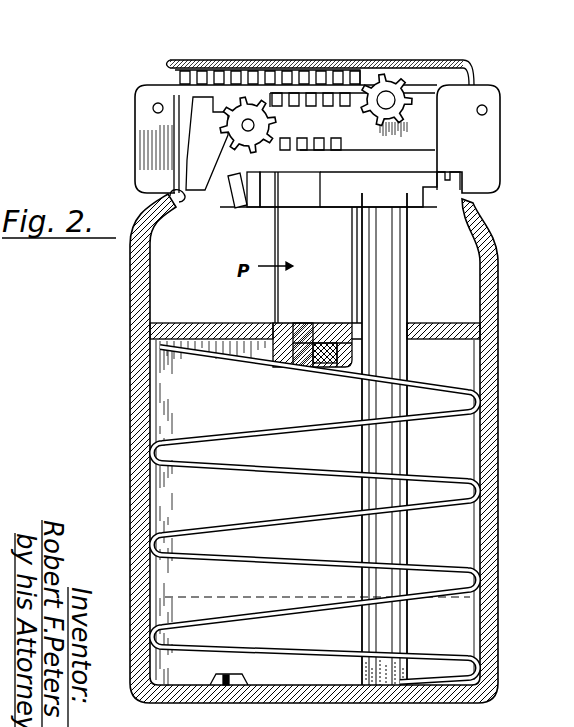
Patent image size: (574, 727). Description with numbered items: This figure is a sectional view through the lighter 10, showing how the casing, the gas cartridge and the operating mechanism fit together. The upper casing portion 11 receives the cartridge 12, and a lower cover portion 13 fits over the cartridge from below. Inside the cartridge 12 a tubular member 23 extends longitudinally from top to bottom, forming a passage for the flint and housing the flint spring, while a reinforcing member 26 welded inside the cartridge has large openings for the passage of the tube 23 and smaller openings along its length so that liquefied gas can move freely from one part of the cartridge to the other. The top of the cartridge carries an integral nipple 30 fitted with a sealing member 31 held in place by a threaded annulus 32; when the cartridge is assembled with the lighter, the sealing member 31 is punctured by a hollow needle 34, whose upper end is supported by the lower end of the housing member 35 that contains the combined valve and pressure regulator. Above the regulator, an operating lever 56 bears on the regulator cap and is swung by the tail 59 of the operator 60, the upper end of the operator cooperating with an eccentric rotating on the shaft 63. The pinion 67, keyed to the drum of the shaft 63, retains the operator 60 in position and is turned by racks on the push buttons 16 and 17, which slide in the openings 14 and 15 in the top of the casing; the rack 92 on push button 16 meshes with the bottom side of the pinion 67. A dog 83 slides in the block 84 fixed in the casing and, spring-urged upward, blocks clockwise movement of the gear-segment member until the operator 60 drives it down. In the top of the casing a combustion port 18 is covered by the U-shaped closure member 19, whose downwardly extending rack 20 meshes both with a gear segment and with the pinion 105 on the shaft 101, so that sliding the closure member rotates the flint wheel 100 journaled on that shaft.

The lighter 10 is at (503, 321).
The upper casing portion 11 is at (130, 333).
The cartridge 12 is at (188, 323).
The lower cover portion 13 is at (132, 664).
The opening 14 is at (480, 87).
The opening 15 is at (167, 84).
The push button 16 is at (500, 137).
The push button 17 is at (136, 137).
The combustion port 18 is at (333, 66).
The closure member 19 is at (310, 62).
The rack 20 is at (342, 86).
The tubular member 23 is at (400, 284).
The reinforcing member 26 is at (453, 384).
The nipple 30 is at (277, 347).
The sealing member 31 is at (293, 368).
The threaded annulus 32 is at (305, 370).
The hollow needle 34 is at (317, 370).
The housing member 35 is at (285, 294).
The operating lever 56 is at (243, 208).
The tail 59 is at (278, 215).
The operator 60 is at (262, 174).
The shaft 63 is at (245, 127).
The pinion 67 is at (267, 113).
The dog 83 is at (222, 208).
The block 84 is at (392, 193).
The rack 92 is at (357, 163).
The flint wheel 100 is at (410, 92).
The shaft 101 is at (403, 110).
The pinion 105 is at (392, 92).